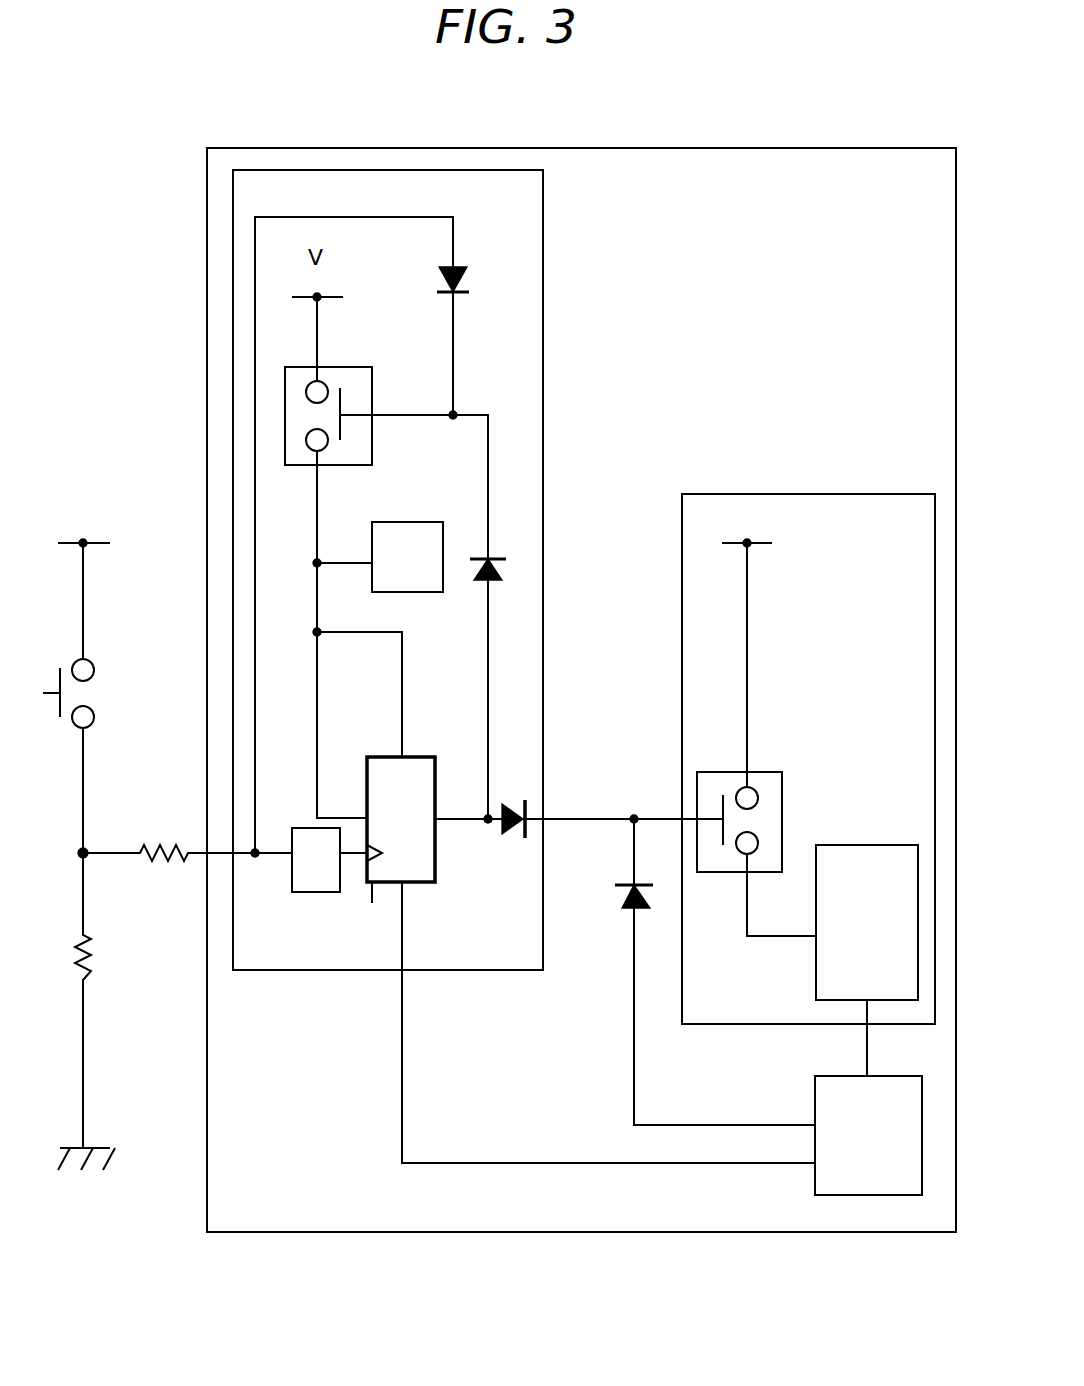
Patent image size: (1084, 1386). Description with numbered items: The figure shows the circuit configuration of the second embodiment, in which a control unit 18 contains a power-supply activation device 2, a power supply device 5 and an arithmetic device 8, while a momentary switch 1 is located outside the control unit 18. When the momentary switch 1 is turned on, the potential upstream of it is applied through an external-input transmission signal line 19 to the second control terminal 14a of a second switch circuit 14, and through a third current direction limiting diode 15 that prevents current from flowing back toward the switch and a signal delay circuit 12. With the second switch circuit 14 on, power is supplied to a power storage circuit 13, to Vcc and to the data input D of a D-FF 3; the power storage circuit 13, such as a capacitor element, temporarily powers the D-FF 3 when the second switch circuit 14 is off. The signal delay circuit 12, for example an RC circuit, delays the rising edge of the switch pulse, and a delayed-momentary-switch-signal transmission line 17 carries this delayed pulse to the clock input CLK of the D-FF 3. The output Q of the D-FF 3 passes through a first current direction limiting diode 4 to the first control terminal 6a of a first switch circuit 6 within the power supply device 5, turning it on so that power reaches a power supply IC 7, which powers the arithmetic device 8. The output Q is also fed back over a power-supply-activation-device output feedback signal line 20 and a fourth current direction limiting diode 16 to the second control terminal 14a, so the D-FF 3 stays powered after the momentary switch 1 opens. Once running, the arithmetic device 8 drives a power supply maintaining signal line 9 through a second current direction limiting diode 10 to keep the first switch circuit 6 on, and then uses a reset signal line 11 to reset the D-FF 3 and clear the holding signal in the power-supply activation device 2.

The momentary switch 1 is at (70, 660).
The power-supply activation device 2 is at (423, 192).
The D-FF 3 is at (417, 862).
The first current direction limiting diode 4 is at (528, 800).
The power supply device 5 is at (715, 538).
The first switch circuit 6 is at (768, 792).
The first control terminal 6a is at (717, 810).
The power supply IC 7 is at (850, 878).
The arithmetic device 8 is at (867, 1158).
The power supply maintaining signal line 9 is at (634, 1093).
The second current direction limiting diode 10 is at (623, 907).
The reset signal line 11 is at (685, 1163).
The signal delay circuit 12 is at (307, 887).
The power storage circuit 13 is at (418, 570).
The second switch circuit 14 is at (360, 397).
The second control terminal 14a is at (350, 416).
The third current direction limiting diode 15 is at (468, 267).
The fourth current direction limiting diode 16 is at (484, 556).
The delayed-momentary-switch-signal transmission line 17 is at (355, 853).
The control unit 18 is at (593, 1207).
The external-input transmission signal line 19 is at (253, 357).
The power-supply-activation-device output feedback signal line 20 is at (488, 677).